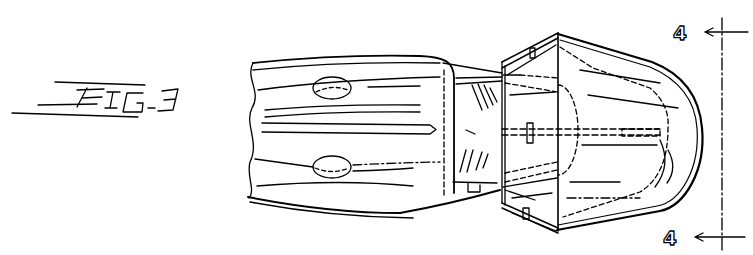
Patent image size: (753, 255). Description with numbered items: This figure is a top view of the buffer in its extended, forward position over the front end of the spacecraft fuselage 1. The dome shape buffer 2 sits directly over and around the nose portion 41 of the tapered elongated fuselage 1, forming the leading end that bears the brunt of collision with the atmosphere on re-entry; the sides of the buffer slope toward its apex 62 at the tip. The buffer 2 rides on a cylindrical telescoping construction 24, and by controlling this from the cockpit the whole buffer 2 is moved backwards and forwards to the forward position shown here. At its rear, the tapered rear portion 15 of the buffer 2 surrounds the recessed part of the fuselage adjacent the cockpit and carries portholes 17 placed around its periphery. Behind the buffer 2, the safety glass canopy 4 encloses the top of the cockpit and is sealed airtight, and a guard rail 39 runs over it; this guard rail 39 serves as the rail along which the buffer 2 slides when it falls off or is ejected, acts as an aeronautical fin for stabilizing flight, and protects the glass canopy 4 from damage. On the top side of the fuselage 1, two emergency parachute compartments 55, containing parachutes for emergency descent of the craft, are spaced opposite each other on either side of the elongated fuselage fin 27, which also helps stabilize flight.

The spacecraft fuselage 1 is at (425, 43).
The dome shape buffer 2 is at (596, 36).
The safety glass canopy 4 is at (472, 86).
The tapered rear portion 15 is at (515, 213).
The portholes 17 is at (530, 143).
The cylindrical telescoping construction 24 is at (602, 140).
The elongated fuselage fin 27 is at (393, 125).
The guard rail 39 is at (470, 133).
The nose portion 41 is at (575, 107).
The emergency parachute compartments 55 is at (336, 79).
The apex 62 is at (558, 35).